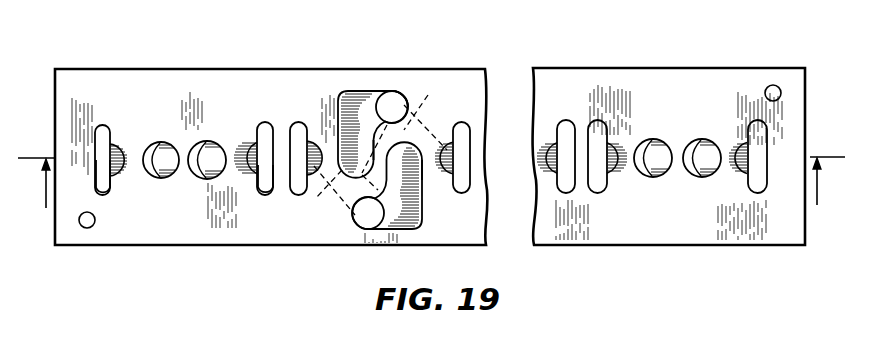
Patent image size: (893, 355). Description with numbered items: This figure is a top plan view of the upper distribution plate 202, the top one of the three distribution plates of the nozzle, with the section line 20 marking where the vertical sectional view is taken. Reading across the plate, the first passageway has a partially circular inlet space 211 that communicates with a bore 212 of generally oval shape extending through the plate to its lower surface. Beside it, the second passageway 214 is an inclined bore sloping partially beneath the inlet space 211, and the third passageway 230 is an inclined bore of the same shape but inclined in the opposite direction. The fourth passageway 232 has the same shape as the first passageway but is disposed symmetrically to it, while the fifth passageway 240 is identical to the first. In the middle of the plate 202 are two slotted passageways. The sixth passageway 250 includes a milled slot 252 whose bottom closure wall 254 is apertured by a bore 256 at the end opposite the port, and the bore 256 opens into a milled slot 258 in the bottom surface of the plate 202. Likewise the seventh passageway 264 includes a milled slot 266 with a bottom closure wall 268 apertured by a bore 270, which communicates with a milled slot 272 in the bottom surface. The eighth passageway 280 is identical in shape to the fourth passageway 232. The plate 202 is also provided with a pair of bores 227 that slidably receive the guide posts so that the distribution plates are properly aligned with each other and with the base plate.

The section line 20 is at (431, 200).
The upper distribution plate 202 is at (207, 238).
The partially circular inlet space 211 is at (120, 145).
The bore of generally oval shape 212 is at (99, 183).
The second passageway 214 is at (163, 155).
The pair of bores 227 is at (765, 93).
The third passageway 230 is at (210, 153).
The fourth passageway 232 is at (264, 183).
The fifth passageway 240 is at (289, 133).
The sixth passageway 250 is at (358, 100).
The milled slot 252 is at (348, 90).
The bottom closure wall 254 is at (368, 102).
The bore 256 is at (394, 94).
The milled slot 258 is at (424, 100).
The seventh passageway 264 is at (407, 211).
The milled slot 266 is at (391, 226).
The bottom closure wall 268 is at (413, 196).
The bore 270 is at (356, 213).
The milled slot 272 is at (307, 175).
The eighth passageway 280 is at (461, 165).